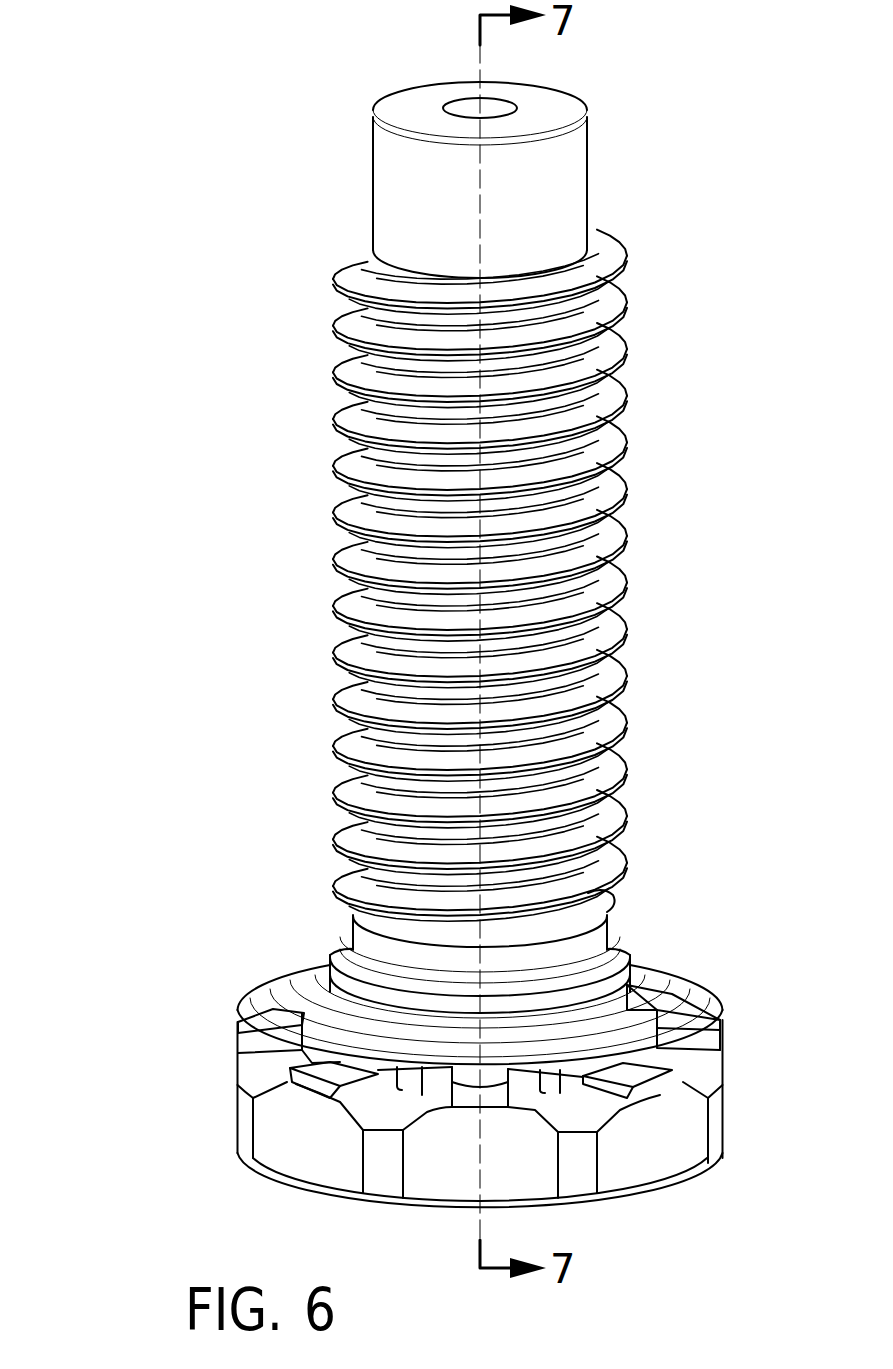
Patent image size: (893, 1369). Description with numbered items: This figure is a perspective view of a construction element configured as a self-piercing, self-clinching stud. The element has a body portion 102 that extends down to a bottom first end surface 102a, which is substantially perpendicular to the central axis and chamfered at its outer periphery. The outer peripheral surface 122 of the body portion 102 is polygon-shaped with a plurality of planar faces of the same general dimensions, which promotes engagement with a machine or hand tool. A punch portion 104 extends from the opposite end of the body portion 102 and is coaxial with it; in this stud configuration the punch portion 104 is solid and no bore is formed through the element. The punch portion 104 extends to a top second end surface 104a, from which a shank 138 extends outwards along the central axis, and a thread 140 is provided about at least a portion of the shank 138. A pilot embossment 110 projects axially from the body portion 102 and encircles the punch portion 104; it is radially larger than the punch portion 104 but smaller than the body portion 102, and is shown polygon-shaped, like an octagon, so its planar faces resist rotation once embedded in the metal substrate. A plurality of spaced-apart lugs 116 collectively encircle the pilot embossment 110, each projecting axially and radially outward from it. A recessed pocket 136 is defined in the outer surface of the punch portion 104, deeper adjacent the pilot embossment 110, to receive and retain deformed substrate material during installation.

The body portion 102 is at (158, 1099).
The first end surface 102a is at (597, 1212).
The punch portion 104 is at (643, 938).
The second end surface 104a is at (352, 946).
The pilot embossment 110 is at (634, 1010).
The lugs 116 is at (690, 1025).
The outer peripheral surface 122 is at (282, 1147).
The recessed pocket 136 is at (322, 1000).
The shank 138 is at (293, 488).
The thread 140 is at (598, 664).